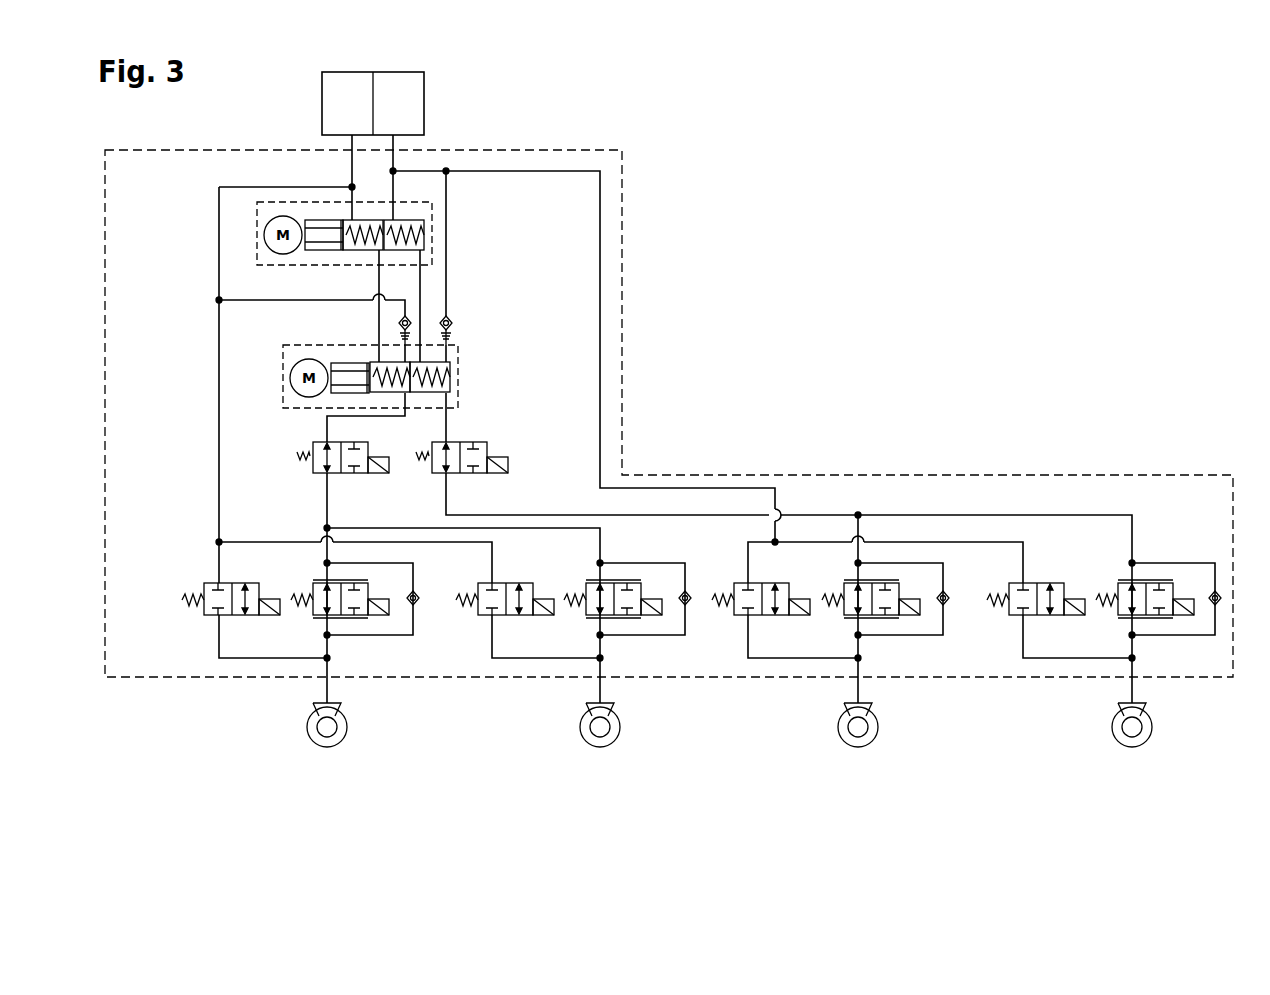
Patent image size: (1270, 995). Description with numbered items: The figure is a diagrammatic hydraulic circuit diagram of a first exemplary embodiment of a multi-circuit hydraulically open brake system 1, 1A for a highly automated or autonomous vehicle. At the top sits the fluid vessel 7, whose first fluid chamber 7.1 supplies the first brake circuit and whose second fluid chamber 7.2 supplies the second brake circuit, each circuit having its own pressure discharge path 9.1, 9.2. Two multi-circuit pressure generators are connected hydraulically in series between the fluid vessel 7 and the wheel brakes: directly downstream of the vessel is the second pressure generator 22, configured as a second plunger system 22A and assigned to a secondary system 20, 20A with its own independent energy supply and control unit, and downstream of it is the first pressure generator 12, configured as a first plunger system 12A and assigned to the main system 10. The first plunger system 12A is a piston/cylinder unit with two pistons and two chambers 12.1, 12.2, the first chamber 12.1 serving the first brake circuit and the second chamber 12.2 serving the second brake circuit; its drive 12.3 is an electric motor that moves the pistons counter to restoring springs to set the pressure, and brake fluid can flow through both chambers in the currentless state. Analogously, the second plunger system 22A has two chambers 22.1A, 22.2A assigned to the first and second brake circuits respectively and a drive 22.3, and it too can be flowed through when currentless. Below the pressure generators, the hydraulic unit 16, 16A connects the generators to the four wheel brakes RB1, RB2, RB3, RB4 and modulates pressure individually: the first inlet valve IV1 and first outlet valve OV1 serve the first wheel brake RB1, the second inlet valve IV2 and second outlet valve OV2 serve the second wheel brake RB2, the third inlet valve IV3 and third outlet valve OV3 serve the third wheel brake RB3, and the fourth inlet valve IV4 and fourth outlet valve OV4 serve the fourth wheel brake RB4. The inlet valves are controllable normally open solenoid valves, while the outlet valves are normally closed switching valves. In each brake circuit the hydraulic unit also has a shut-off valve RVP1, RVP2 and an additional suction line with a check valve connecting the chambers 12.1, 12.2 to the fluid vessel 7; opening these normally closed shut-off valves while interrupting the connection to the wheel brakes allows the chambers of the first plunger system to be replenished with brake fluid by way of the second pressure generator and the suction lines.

The multi-circuit hydraulically open brake system 1 is at (669, 413).
The brake system 1A is at (669, 413).
The fluid vessel 7 is at (407, 103).
The first fluid chamber 7.1 is at (362, 115).
The second fluid chamber 7.2 is at (412, 115).
The first pressure discharge path 9.1 is at (219, 188).
The second pressure discharge path 9.2 is at (600, 234).
The main system 10 is at (1110, 475).
The first pressure generator 12 is at (319, 388).
The first plunger system 12A is at (319, 388).
The first chamber 12.1 is at (385, 390).
The second chamber 12.2 is at (430, 393).
The drive 12.3 is at (283, 386).
The hydraulic unit 16 is at (669, 413).
The hydraulic unit 16A is at (669, 413).
The secondary system 20 is at (337, 246).
The secondary system 20A is at (337, 246).
The second pressure generator 22 is at (354, 255).
The second plunger system 22A is at (354, 255).
The first chamber 22.1A is at (367, 251).
The second chamber 22.2A is at (400, 251).
The drive 22.3 is at (257, 242).
The first outlet valve OV1 is at (228, 587).
The second outlet valve OV2 is at (503, 587).
The third outlet valve OV3 is at (758, 587).
The fourth outlet valve OV4 is at (1032, 587).
The first inlet valve IV1 is at (340, 588).
The second inlet valve IV2 is at (613, 588).
The third inlet valve IV3 is at (871, 588).
The fourth inlet valve IV4 is at (1145, 588).
The first shut-off valve RVP1 is at (343, 470).
The second shut-off valve RVP2 is at (462, 470).
The first wheel brake RB1 is at (327, 737).
The second wheel brake RB2 is at (601, 737).
The third wheel brake RB3 is at (858, 737).
The fourth wheel brake RB4 is at (1132, 737).